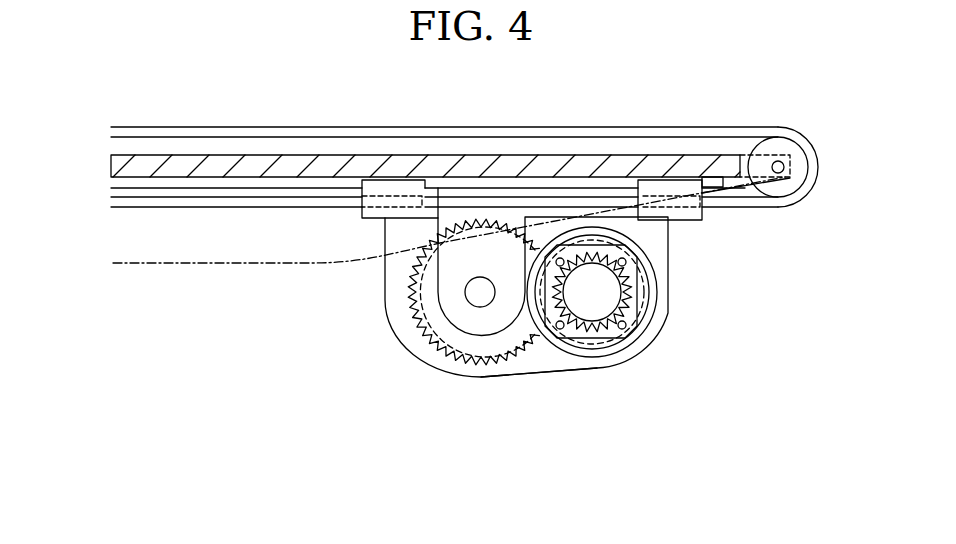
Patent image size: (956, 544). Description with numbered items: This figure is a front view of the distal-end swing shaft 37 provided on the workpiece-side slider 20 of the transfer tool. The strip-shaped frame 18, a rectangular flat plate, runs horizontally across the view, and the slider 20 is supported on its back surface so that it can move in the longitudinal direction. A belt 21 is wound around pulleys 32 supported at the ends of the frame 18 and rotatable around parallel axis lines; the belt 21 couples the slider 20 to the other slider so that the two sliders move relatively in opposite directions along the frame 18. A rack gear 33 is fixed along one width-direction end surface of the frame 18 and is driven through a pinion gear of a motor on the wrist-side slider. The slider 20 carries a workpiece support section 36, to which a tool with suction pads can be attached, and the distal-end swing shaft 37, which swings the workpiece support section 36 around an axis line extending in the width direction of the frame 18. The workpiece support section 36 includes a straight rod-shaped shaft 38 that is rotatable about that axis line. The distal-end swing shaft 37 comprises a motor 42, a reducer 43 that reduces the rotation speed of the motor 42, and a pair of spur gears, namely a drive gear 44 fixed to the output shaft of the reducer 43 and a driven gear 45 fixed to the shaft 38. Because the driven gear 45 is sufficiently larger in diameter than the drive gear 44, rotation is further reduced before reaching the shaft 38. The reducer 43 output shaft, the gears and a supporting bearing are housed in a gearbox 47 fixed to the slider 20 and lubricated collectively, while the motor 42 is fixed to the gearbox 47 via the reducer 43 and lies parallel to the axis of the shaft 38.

The frame 18 is at (297, 148).
The slider 20 is at (365, 220).
The belt 21 is at (208, 154).
The pulley 32 is at (753, 146).
The rack gear 33 is at (145, 208).
The workpiece support section 36 is at (465, 300).
The distal-end swing shaft 37 is at (523, 378).
The shaft 38 is at (480, 308).
The motor 42 is at (632, 284).
The reducer 43 is at (655, 321).
The drive gear 44 is at (598, 340).
The driven gear 45 is at (415, 305).
The gearbox 47 is at (557, 374).